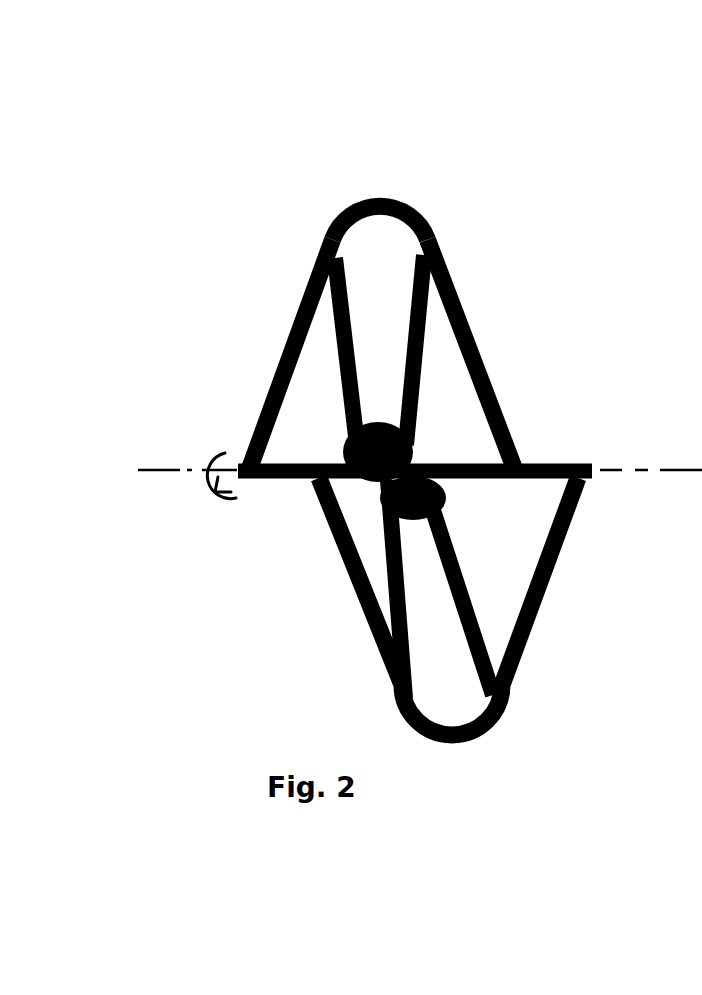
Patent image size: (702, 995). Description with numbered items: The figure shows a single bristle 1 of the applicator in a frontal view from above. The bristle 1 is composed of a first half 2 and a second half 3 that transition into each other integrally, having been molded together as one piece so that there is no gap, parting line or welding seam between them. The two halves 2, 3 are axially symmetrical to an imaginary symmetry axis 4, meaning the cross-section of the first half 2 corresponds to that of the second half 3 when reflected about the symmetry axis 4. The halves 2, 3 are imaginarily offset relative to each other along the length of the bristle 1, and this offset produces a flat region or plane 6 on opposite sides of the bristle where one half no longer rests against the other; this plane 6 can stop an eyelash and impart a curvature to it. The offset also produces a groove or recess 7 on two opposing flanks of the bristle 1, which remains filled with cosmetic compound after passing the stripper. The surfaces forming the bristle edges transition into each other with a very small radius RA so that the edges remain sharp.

The bristle 1 is at (264, 266).
The first half 2 is at (460, 310).
The second half 3 is at (540, 630).
The symmetry axis 4 is at (603, 467).
The flat region or plane 6 is at (257, 478).
The groove or recess 7 is at (531, 418).
The radius RA is at (220, 463).